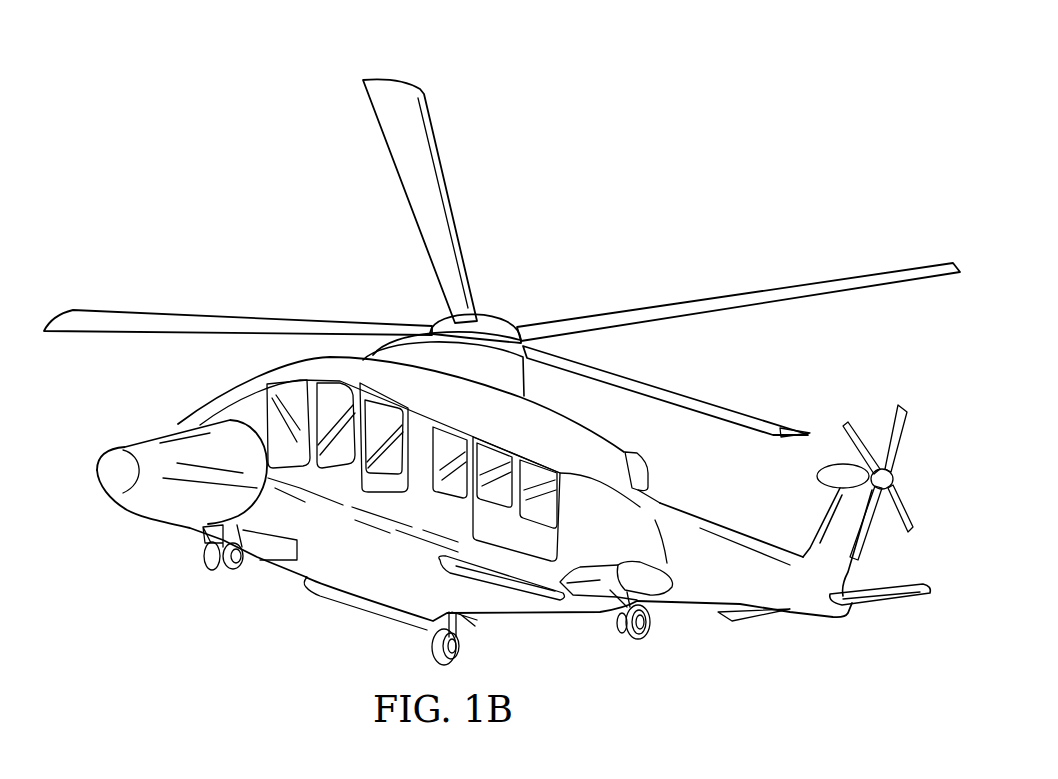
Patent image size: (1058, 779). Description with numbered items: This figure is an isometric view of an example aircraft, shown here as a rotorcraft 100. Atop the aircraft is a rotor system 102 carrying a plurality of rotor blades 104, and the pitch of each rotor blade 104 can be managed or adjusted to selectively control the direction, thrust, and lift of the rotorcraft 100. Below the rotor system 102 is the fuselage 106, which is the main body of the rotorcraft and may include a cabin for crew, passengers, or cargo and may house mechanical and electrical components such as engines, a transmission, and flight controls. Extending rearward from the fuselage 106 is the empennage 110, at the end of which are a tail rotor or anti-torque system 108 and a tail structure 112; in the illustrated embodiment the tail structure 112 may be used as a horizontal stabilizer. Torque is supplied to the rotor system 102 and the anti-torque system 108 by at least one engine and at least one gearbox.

The rotorcraft 100 is at (229, 73).
The rotor system 102 is at (514, 287).
The rotor blades 104 is at (725, 308).
The fuselage 106 is at (307, 567).
The tail rotor or anti-torque system 108 is at (882, 392).
The empennage 110 is at (700, 590).
The tail structure 112 is at (890, 603).